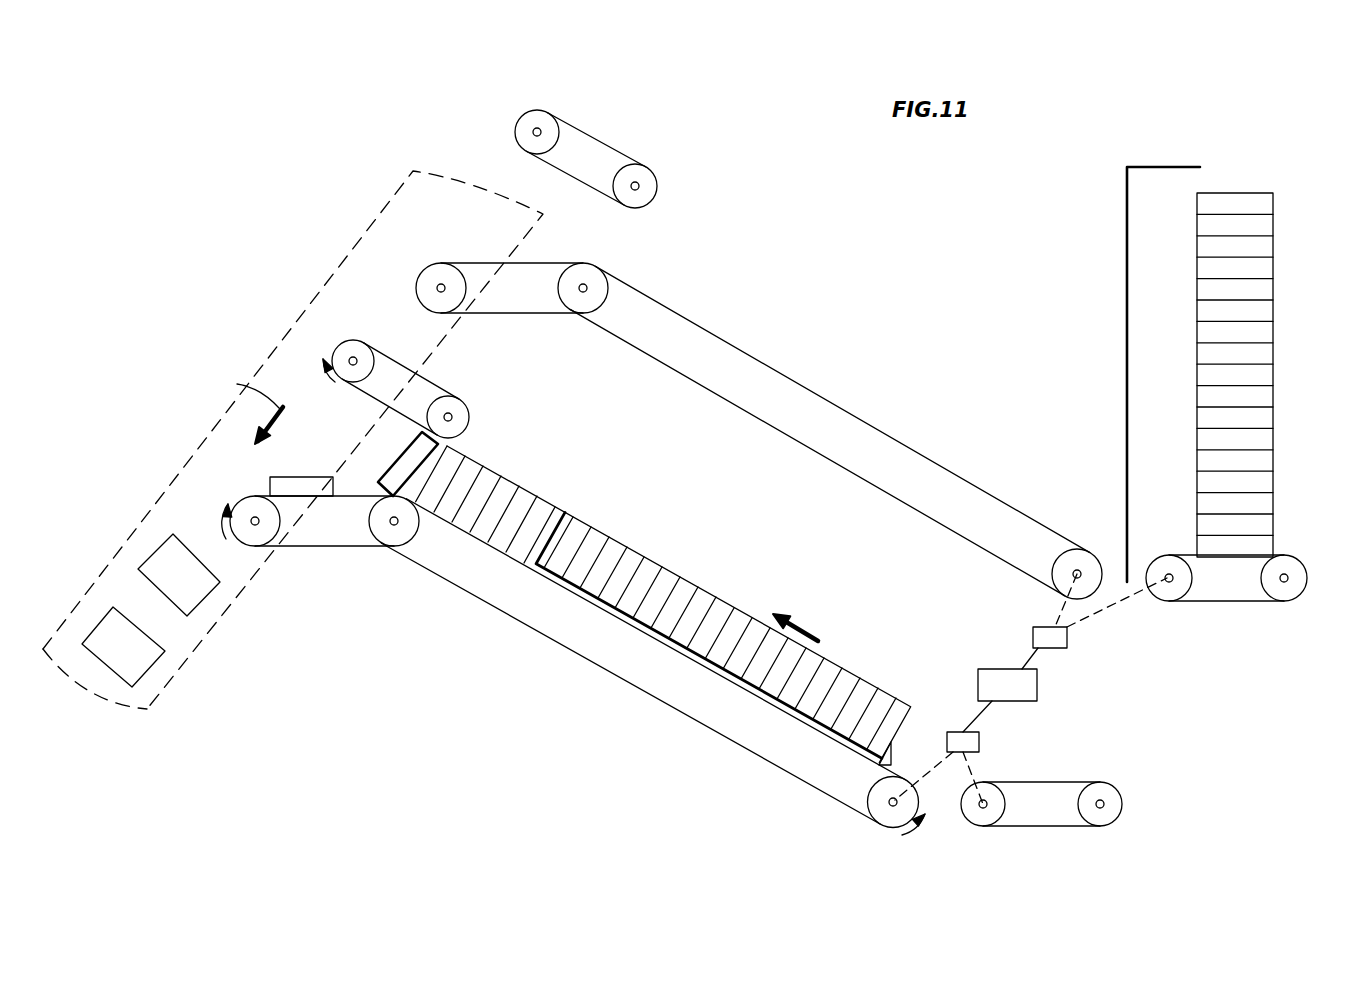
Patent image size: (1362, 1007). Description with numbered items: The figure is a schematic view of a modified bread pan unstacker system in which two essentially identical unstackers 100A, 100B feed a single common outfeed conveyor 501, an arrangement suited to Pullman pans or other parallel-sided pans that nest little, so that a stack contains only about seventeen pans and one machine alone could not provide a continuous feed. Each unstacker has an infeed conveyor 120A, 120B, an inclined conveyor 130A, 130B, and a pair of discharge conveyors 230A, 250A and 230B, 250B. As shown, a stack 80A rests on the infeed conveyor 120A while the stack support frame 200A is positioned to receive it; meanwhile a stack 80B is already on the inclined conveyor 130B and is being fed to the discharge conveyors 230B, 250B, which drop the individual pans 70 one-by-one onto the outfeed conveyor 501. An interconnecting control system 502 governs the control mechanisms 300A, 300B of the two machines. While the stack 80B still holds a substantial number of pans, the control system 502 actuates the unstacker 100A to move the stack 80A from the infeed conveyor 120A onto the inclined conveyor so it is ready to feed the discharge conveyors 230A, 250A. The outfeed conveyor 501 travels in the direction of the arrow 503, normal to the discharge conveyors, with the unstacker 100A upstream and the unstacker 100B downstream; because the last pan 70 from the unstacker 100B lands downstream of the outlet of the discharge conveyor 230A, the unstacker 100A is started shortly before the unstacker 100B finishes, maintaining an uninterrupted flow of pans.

The pan 70 is at (295, 482).
The stack 80A is at (1288, 301).
The stack 80B is at (657, 560).
The bread pan unstacker 100A is at (837, 401).
The bread pan unstacker 100B is at (654, 667).
The infeed conveyor 120A is at (1235, 612).
The infeed conveyor 120B is at (1057, 835).
The inclined conveyor 130A is at (808, 390).
The inclined conveyor 130B is at (568, 688).
The stack support frame 200A is at (1112, 248).
The discharge conveyor 230A is at (515, 313).
The discharge conveyor 230B is at (317, 550).
The discharge conveyor 250A is at (592, 135).
The discharge conveyor 250B is at (440, 387).
The control mechanism 300A is at (1068, 642).
The control mechanism 300B is at (980, 743).
The outfeed conveyor 501 is at (358, 248).
The interconnecting control system 502 is at (1038, 687).
The arrow 503 is at (239, 404).